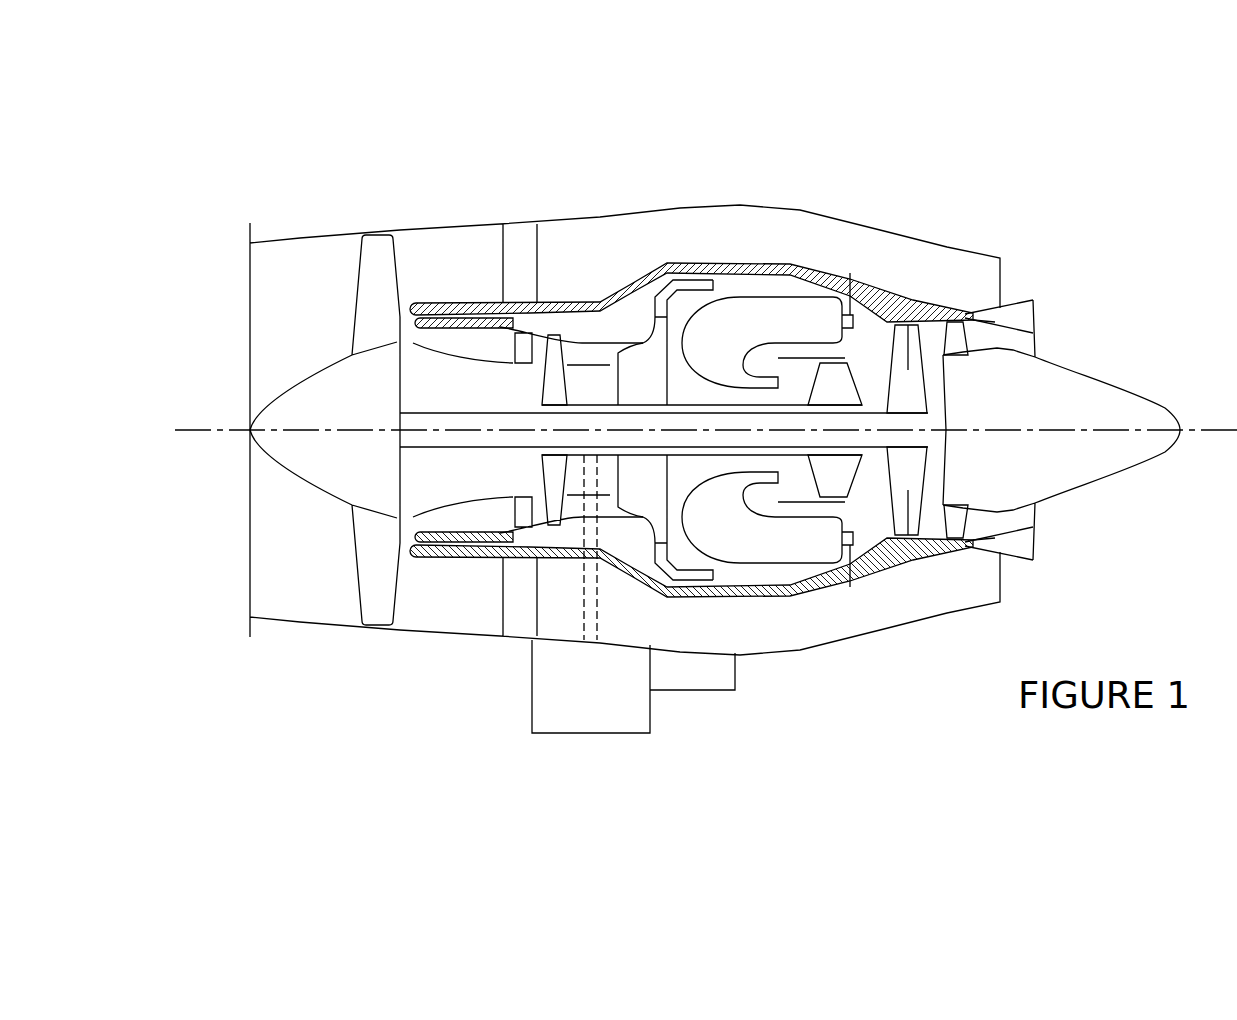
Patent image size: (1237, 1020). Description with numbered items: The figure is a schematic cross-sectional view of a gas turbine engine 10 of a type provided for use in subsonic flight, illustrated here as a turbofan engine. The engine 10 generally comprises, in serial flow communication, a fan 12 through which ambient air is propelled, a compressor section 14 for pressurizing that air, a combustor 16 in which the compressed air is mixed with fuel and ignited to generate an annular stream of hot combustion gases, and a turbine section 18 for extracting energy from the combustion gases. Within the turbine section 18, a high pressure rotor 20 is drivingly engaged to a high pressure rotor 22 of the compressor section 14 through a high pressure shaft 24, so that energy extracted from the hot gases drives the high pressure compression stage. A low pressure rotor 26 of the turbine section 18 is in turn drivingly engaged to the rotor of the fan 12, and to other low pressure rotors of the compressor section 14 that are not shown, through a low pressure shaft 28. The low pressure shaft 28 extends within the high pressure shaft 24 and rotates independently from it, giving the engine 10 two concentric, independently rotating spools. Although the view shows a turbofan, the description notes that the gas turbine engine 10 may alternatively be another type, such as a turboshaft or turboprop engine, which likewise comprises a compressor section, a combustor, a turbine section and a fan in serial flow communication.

The gas turbine engine 10 is at (890, 152).
The fan 12 is at (373, 557).
The compressor section 14 is at (582, 343).
The combustor 16 is at (762, 313).
The turbine section 18 is at (855, 487).
The high pressure rotor 20 is at (843, 372).
The high pressure rotor 22 is at (643, 367).
The high pressure shaft 24 is at (762, 403).
The low pressure rotor 26 is at (887, 318).
The low pressure shaft 28 is at (443, 455).